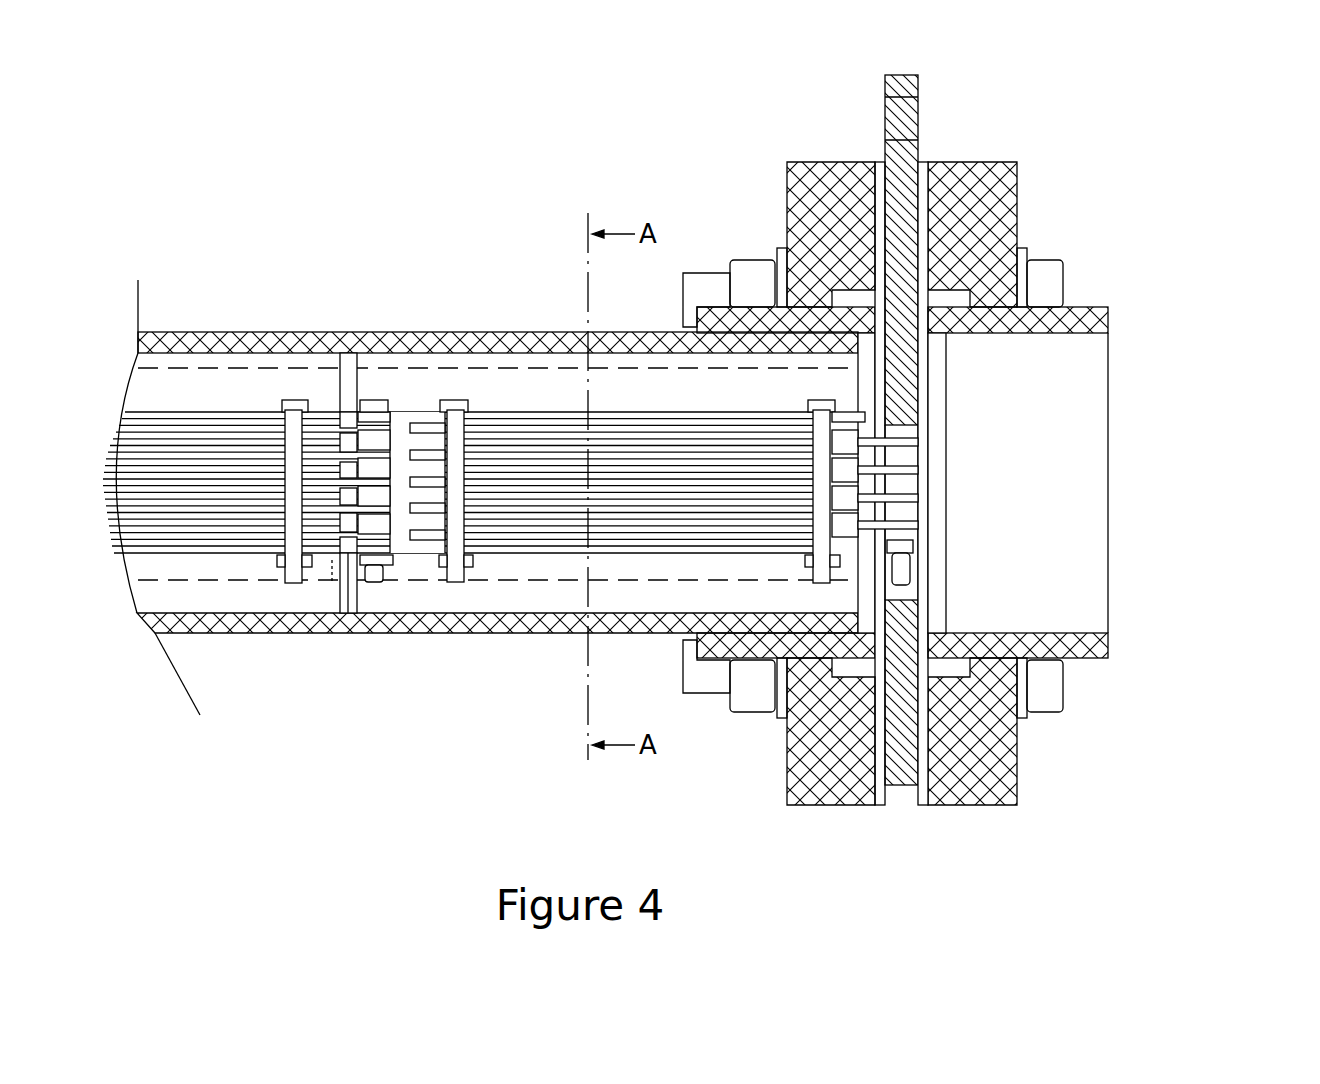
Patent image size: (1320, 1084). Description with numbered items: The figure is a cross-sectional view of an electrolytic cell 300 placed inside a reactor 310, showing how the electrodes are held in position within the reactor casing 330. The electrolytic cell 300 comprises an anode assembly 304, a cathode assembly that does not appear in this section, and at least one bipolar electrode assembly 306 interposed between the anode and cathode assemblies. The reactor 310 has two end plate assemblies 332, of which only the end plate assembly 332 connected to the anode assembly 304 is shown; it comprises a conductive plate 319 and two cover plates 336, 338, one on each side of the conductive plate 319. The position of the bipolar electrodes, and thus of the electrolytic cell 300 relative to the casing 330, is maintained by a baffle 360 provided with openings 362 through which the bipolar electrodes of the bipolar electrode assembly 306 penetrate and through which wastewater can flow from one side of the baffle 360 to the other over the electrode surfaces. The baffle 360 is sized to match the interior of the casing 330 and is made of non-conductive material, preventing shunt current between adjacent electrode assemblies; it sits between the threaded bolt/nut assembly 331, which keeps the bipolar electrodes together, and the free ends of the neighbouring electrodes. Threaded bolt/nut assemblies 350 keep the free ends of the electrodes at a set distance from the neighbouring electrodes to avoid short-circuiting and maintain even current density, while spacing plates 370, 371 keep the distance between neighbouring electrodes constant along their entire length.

The electrolytic cell 300 is at (485, 429).
The anode assembly 304 is at (920, 482).
The bipolar electrode assembly 306 is at (404, 403).
The reactor 310 is at (567, 147).
The conductive plate 319 is at (918, 148).
The casing 330 is at (425, 634).
The threaded bolt/nut assembly 331 is at (367, 400).
The end plate assembly 332 is at (936, 437).
The cover plate 336 is at (985, 232).
The cover plate 338 is at (823, 183).
The threaded bolt/nut assembly 350 is at (293, 585).
The baffle 360 is at (348, 476).
The openings 362 is at (353, 635).
The spacing plate 370 is at (753, 398).
The spacing plate 371 is at (265, 393).